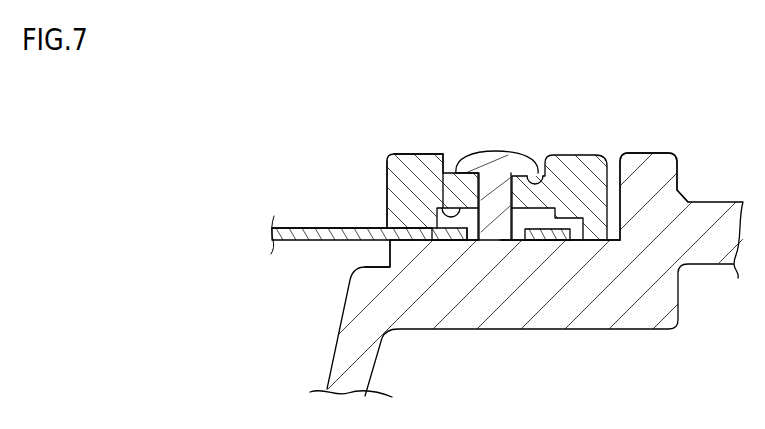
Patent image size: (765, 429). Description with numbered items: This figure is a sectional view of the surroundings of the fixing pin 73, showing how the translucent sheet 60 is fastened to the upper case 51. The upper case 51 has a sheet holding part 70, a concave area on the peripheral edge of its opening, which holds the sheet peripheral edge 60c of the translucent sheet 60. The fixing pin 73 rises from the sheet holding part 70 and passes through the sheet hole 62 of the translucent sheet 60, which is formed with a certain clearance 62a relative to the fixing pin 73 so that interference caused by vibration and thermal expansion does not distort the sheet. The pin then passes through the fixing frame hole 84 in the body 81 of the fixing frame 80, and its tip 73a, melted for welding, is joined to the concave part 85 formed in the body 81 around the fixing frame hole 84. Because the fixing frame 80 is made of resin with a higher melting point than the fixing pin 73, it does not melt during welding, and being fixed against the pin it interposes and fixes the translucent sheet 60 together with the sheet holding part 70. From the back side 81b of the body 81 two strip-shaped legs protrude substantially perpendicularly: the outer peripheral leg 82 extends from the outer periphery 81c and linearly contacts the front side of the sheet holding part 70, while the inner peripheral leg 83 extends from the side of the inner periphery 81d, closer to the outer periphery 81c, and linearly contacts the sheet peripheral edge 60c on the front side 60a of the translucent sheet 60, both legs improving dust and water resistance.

The upper case 51 is at (662, 333).
The translucent sheet 60 is at (291, 247).
The front side of the translucent sheet 60a is at (322, 228).
The sheet peripheral edge 60c is at (548, 242).
The sheet hole 62 is at (520, 242).
The clearance 62a is at (514, 242).
The sheet holding part 70 is at (570, 240).
The fixing pin 73 is at (488, 190).
The tip of the fixing pin 73a is at (491, 151).
The fixing frame 80 is at (377, 174).
The body 81 is at (415, 163).
The back side of the body 81b is at (446, 172).
The outer periphery of the body 81c is at (604, 156).
The inner periphery of the body 81d is at (385, 153).
The outer peripheral leg 82 is at (677, 183).
The inner peripheral leg 83 is at (389, 250).
The fixing frame hole 84 is at (467, 244).
The concave part 85 is at (538, 174).